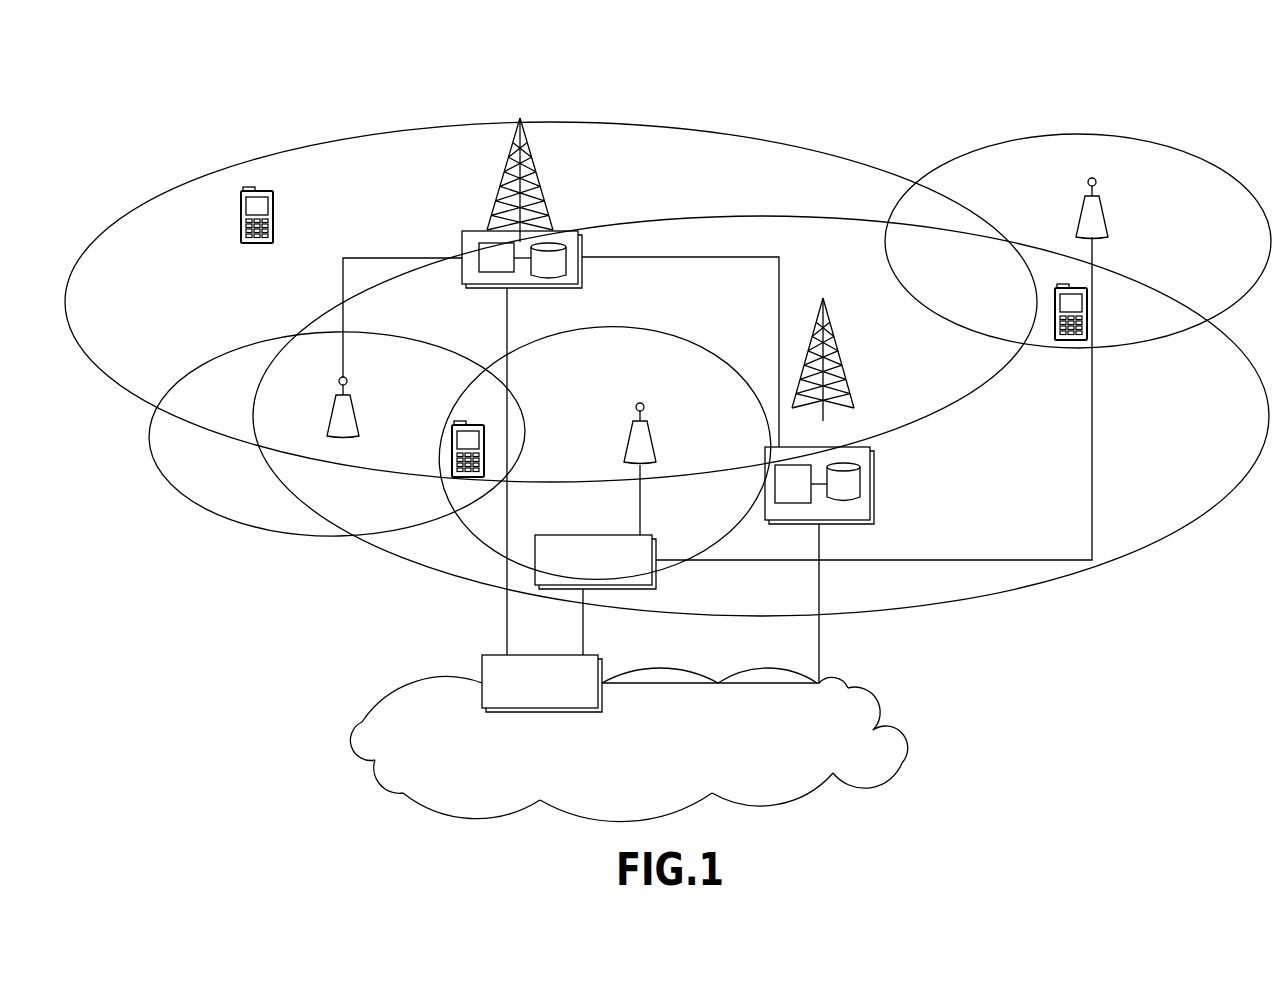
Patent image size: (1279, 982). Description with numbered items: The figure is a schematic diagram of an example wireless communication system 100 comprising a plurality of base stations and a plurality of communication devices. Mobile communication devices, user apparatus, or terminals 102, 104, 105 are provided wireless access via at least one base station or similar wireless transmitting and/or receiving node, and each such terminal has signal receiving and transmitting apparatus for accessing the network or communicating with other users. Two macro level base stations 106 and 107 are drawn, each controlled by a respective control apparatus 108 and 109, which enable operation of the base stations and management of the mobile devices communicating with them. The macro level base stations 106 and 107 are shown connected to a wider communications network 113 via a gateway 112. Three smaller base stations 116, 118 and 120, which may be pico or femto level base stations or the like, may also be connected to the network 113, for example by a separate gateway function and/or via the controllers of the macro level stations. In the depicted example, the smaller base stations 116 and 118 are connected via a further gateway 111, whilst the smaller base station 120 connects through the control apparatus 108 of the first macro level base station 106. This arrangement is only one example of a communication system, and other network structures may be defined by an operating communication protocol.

The wireless communication system 100 is at (192, 72).
The mobile communication device 102 is at (275, 214).
The mobile communication device 104 is at (450, 450).
The mobile communication device 105 is at (1076, 342).
The macro level base station 106 is at (501, 176).
The macro level base station 107 is at (834, 350).
The control apparatus 108 is at (584, 270).
The control apparatus 109 is at (874, 490).
The gateway 111 is at (599, 535).
The gateway 112 is at (481, 663).
The wider communications network 113 is at (372, 698).
The smaller base station 116 is at (1080, 206).
The smaller base station 118 is at (630, 437).
The smaller base station 120 is at (330, 409).